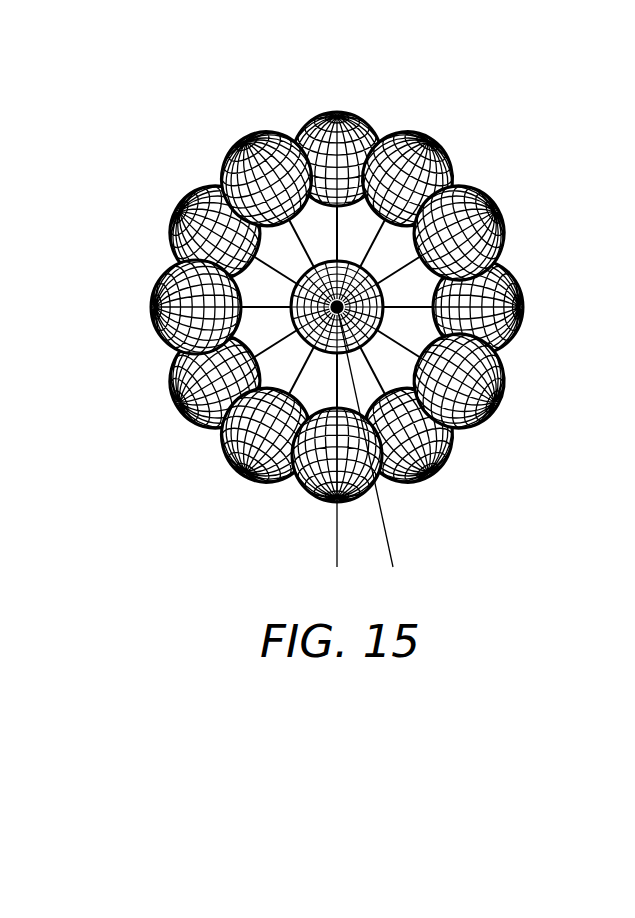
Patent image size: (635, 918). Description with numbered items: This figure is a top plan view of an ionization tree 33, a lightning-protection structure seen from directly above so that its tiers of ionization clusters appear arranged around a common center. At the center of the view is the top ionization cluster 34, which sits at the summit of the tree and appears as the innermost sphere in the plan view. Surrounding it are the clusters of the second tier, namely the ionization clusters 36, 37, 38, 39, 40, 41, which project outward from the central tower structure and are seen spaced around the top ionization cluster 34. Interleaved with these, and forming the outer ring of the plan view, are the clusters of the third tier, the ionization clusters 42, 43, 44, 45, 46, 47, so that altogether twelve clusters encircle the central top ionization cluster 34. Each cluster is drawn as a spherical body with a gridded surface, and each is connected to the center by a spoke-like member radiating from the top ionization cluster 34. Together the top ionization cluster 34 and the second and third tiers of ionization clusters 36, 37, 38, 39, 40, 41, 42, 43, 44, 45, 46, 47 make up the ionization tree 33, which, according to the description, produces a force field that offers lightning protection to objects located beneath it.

The ionization tree 33 is at (207, 172).
The top ionization cluster 34 is at (337, 307).
The ionization cluster 36 is at (153, 325).
The ionization cluster 37 is at (233, 470).
The ionization cluster 38 is at (437, 473).
The ionization cluster 39 is at (521, 311).
The ionization cluster 40 is at (438, 155).
The ionization cluster 41 is at (247, 143).
The ionization cluster 42 is at (175, 413).
The ionization cluster 43 is at (337, 503).
The ionization cluster 44 is at (494, 412).
The ionization cluster 45 is at (510, 213).
The ionization cluster 46 is at (337, 113).
The ionization cluster 47 is at (170, 213).